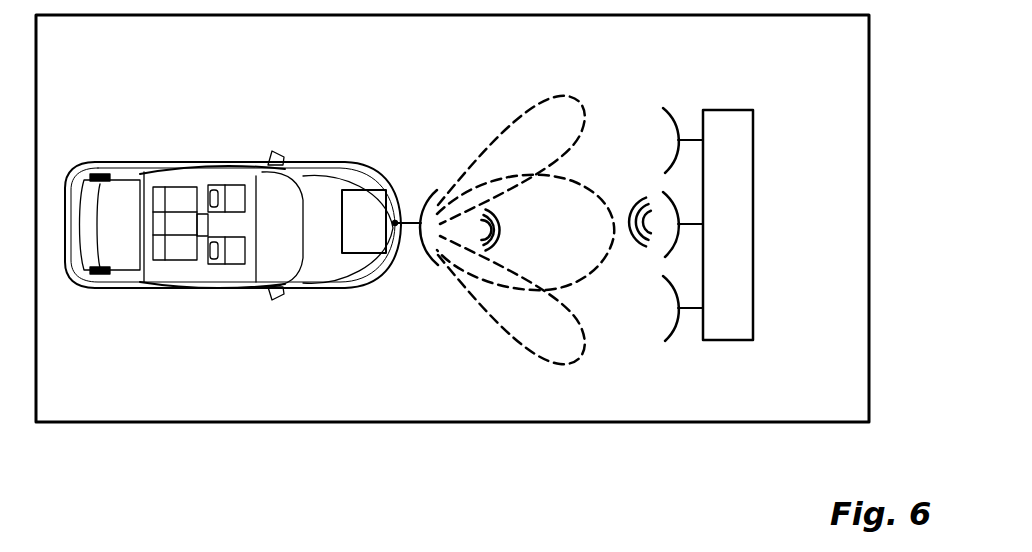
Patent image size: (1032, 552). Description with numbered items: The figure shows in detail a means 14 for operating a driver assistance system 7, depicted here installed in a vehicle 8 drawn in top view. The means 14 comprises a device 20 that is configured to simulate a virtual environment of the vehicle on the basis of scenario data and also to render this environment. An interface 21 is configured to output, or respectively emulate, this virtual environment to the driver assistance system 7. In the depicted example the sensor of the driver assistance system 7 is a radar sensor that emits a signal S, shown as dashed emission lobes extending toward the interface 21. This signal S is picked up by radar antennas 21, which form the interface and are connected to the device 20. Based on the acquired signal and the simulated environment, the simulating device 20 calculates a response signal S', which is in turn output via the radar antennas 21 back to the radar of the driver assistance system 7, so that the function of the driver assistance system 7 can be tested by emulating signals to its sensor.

The driver assistance system 7 is at (370, 234).
The vehicle 8 is at (134, 165).
The means for operating a driver assistance system 14 is at (432, 425).
The device 20 is at (751, 140).
The interface 21 is at (663, 110).
The signal S is at (522, 230).
The response signal S' is at (635, 198).